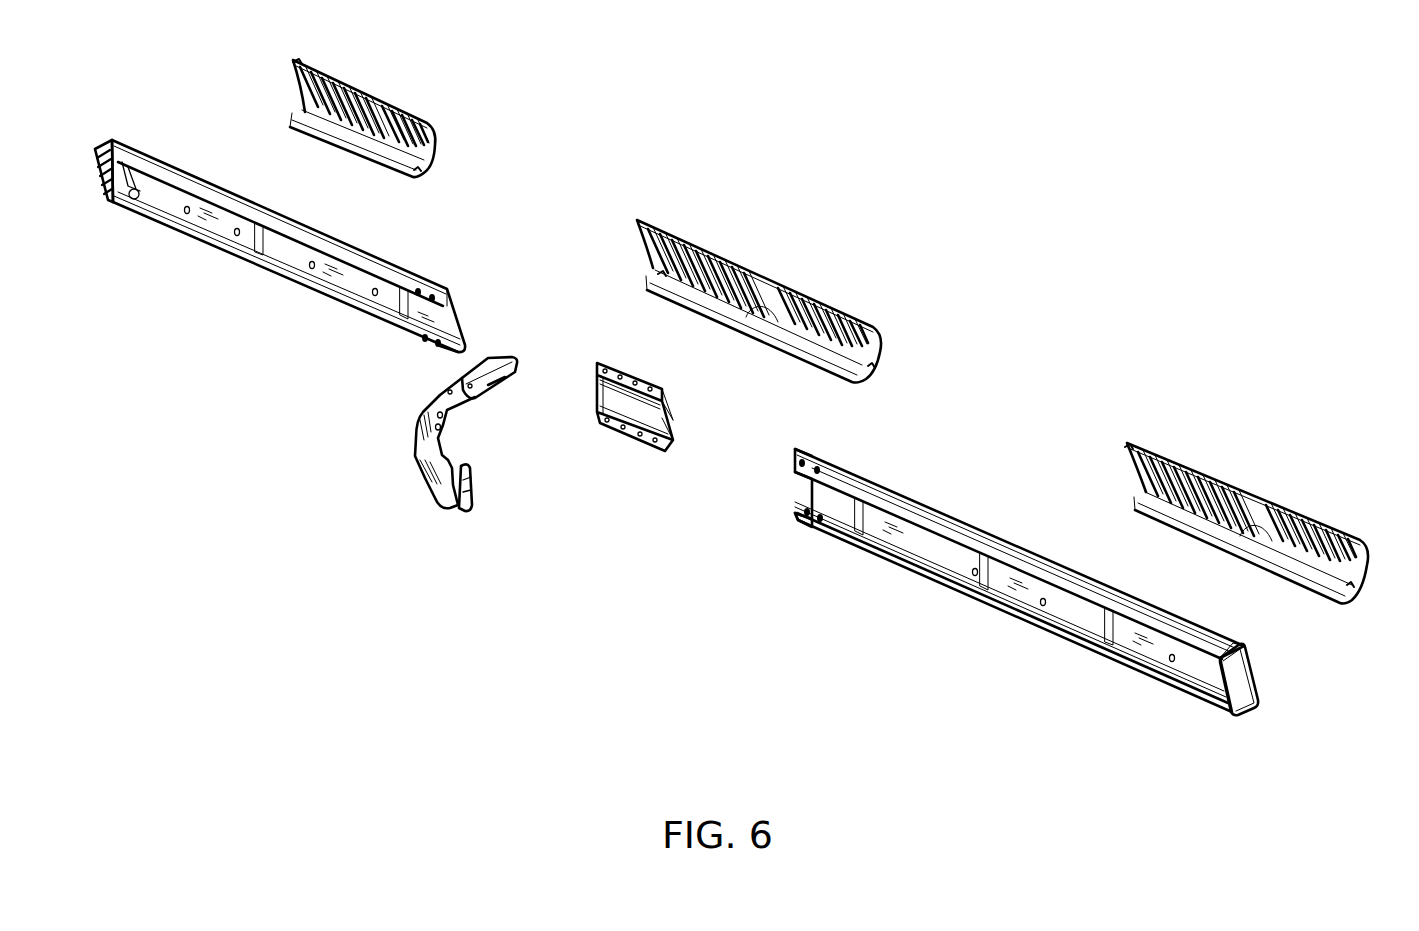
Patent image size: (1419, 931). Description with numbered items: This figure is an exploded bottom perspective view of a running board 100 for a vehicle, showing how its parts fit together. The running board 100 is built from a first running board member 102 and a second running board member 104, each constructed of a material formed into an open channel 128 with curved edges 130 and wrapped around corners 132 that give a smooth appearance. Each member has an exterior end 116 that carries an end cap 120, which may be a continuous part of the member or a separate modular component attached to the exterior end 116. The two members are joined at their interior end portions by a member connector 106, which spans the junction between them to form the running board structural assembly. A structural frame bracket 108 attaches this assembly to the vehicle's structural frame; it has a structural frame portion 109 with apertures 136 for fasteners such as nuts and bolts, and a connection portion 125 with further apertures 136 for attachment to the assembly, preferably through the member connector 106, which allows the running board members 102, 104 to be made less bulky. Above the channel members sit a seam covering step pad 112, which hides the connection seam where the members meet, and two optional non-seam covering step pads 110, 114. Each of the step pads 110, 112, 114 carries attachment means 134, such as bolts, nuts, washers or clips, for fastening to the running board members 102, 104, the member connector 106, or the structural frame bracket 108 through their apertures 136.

The running board 100 is at (1064, 146).
The first running board member 102 is at (237, 196).
The second running board member 104 is at (1012, 551).
The member connector 106 is at (632, 410).
The structural frame bracket 108 is at (427, 457).
The structural frame portion 109 is at (482, 383).
The non-seam covering step pad 110 is at (370, 93).
The seam covering step pad 112 is at (770, 268).
The non-seam covering step pad 114 is at (1258, 493).
The exterior end 116 is at (113, 138).
The end cap 120 is at (100, 150).
The connection portion 125 is at (450, 507).
The open channel 128 is at (823, 490).
The curved edges 130 is at (445, 307).
The wrapped around corners 132 is at (453, 353).
The attachment means 134 is at (293, 66).
The apertures 136 is at (187, 212).